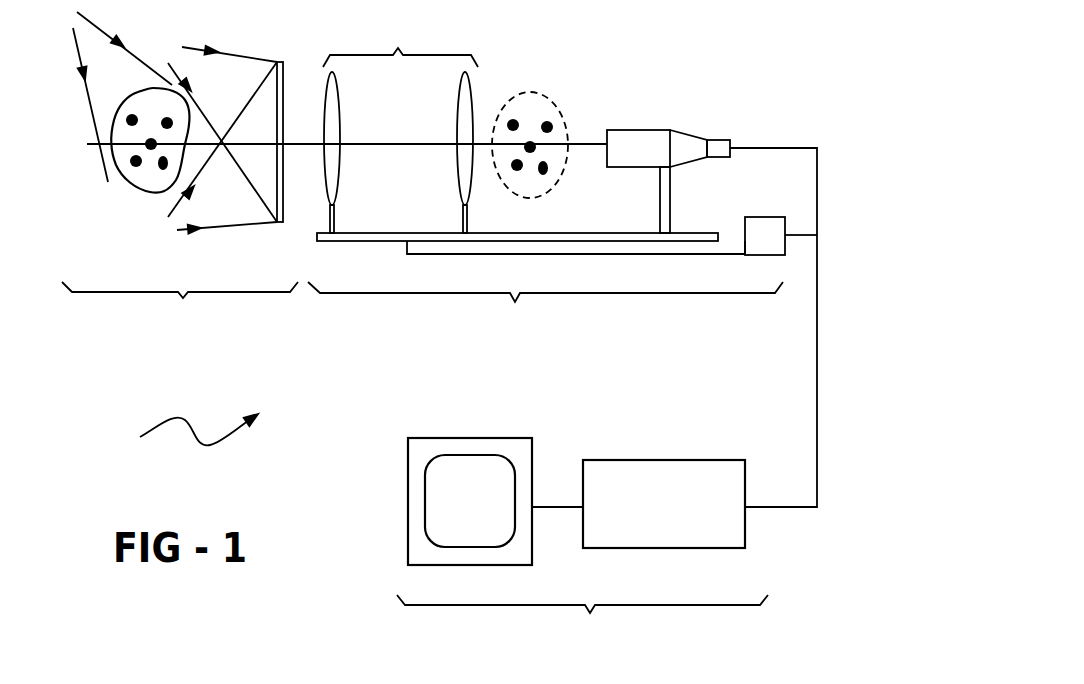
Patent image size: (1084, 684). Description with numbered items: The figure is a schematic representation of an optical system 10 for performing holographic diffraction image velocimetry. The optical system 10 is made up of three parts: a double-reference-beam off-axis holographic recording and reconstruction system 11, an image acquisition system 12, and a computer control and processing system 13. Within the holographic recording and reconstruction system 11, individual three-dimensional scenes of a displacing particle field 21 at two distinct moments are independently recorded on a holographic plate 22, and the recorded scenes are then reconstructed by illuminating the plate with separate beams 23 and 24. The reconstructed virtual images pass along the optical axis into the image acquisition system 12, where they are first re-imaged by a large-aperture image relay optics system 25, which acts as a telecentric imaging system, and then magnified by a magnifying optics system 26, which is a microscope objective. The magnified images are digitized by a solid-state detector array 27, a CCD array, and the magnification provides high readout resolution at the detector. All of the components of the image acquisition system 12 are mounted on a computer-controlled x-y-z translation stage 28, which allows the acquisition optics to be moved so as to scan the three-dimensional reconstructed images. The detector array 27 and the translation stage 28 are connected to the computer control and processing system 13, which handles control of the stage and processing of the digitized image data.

The optical system 10 is at (182, 434).
The double-reference-beam off-axis holographic recording and reconstruction system 11 is at (180, 305).
The image acquisition system 12 is at (545, 307).
The computer control and processing system 13 is at (582, 539).
The displacing particle field 21 is at (140, 187).
The holographic plate 22 is at (286, 62).
The reconstruction beam 23 is at (230, 75).
The reconstruction beam 24 is at (235, 208).
The large-aperture image relay optics system 25 is at (400, 127).
The magnifying optics system 26 is at (637, 137).
The solid-state detector array 27 is at (718, 142).
The computer-controlled x-y-z translation stage 28 is at (353, 242).